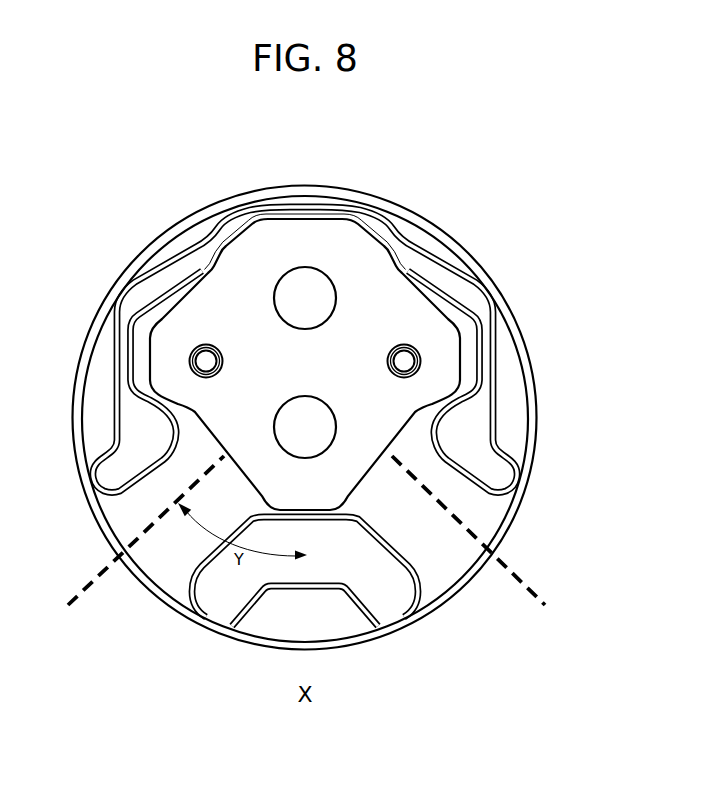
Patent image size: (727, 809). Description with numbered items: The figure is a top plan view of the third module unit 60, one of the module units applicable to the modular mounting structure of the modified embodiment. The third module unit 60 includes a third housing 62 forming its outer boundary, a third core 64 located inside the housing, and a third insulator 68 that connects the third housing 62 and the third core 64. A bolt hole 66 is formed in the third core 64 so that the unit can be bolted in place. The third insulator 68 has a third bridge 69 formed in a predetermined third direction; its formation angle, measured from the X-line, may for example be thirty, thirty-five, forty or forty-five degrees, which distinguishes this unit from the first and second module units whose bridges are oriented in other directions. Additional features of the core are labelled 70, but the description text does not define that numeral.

The third module unit 60 is at (380, 653).
The third housing 62 is at (465, 588).
The third core 64 is at (420, 312).
The bolt hole 66 is at (324, 435).
The third insulator 68 is at (387, 589).
The third bridge 69 is at (505, 487).
The fastening holes 70 is at (204, 361).